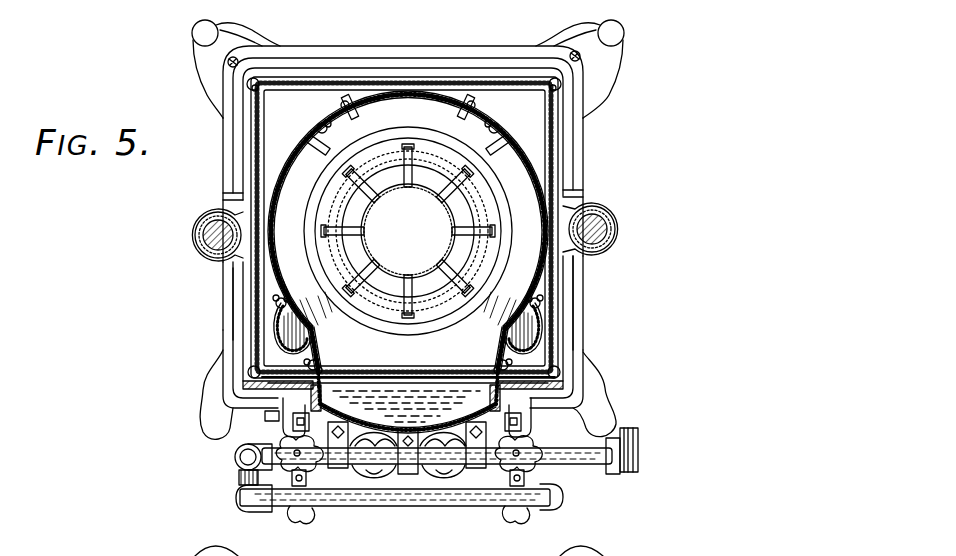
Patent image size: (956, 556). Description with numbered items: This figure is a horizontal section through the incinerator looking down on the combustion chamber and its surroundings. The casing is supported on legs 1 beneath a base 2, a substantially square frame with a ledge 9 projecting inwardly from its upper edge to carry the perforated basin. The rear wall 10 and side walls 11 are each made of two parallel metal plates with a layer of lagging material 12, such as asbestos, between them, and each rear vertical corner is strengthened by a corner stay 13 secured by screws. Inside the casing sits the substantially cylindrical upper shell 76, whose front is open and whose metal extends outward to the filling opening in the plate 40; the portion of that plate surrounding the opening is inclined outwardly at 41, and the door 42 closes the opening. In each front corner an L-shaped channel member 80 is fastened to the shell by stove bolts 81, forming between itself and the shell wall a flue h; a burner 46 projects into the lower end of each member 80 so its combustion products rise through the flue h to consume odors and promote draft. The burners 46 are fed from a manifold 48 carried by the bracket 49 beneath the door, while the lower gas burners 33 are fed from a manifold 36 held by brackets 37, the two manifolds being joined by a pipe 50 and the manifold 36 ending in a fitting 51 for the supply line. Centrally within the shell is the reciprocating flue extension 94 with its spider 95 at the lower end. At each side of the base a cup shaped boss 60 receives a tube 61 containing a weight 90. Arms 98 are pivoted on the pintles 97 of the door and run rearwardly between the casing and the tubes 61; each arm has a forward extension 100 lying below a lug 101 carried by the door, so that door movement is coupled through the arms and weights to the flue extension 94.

The legs 1 is at (232, 34).
The base 2 is at (584, 300).
The ledge 9 is at (408, 215).
The rear wall 10 is at (466, 80).
The side walls 11 is at (252, 151).
The lagging material 12 is at (326, 82).
The corner stay 13 is at (246, 96).
The gas burners 33 is at (427, 459).
The manifold 36 is at (568, 450).
The brackets 37 is at (509, 471).
The plate 40 is at (272, 418).
The inclined portion 41 is at (402, 398).
The door 42 is at (425, 428).
The burner 46 is at (256, 496).
The manifold 48 is at (468, 500).
The bracket 49 is at (412, 496).
The pipe 50 is at (240, 484).
The fitting 51 is at (637, 450).
The cup shaped boss 60 is at (200, 222).
The tube 61 is at (204, 240).
The upper shell 76 is at (296, 166).
The channel member 80 is at (320, 358).
The stove bolts 81 is at (525, 300).
The weight 90 is at (210, 248).
The flue extension 94 is at (455, 170).
The spider 95 is at (472, 253).
The gudgeons or pintles 97 is at (540, 413).
The arms 98 is at (241, 346).
The extension 100 is at (298, 458).
The lug 101 is at (312, 440).
The flue h is at (302, 338).